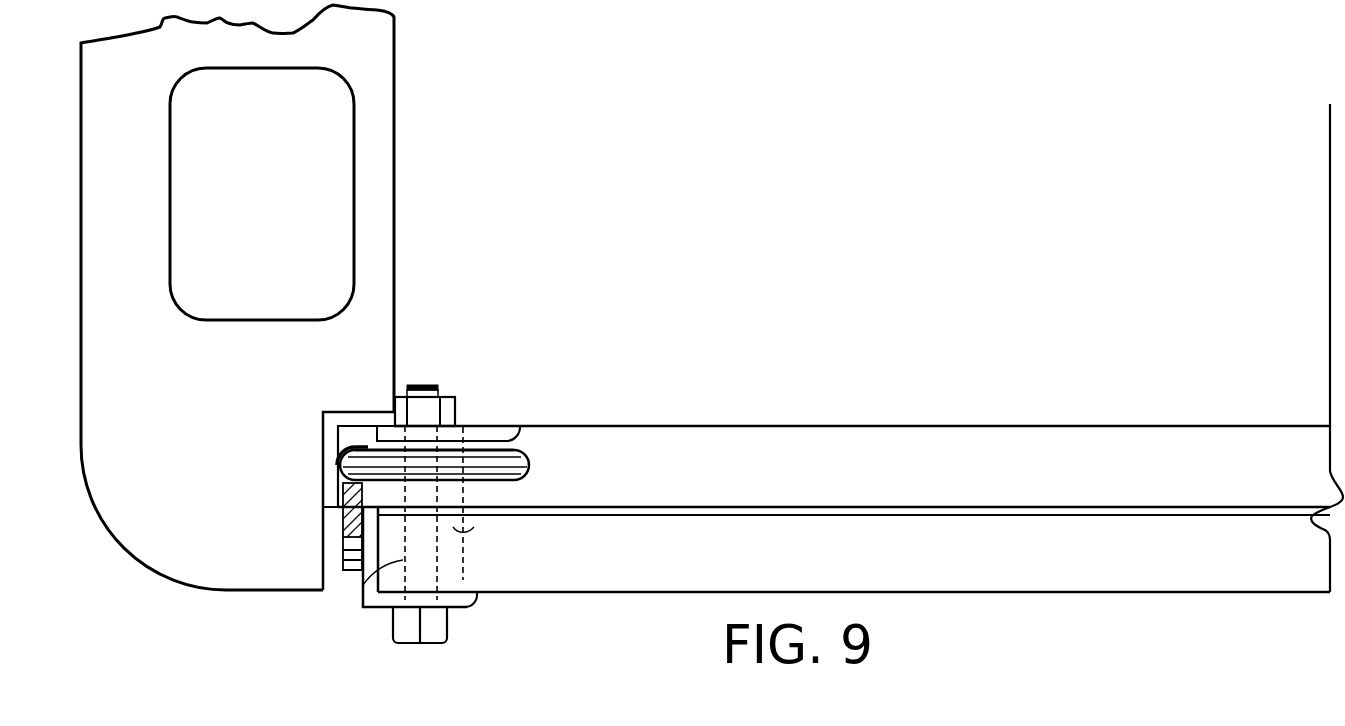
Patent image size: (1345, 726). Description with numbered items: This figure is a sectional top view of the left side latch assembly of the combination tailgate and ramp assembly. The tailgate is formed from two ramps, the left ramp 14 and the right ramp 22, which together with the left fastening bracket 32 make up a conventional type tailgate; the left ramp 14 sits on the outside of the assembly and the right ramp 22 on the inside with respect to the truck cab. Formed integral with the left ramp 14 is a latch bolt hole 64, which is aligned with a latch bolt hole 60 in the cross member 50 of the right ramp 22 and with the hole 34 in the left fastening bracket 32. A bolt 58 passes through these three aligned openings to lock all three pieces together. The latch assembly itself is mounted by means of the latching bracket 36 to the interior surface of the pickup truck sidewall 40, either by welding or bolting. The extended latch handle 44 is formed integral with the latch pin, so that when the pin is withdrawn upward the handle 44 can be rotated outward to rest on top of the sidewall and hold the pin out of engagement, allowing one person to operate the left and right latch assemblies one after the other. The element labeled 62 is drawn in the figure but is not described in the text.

The left ramp 14 is at (575, 574).
The right ramp 22 is at (584, 482).
The left fastening bracket 32 is at (378, 598).
The hole 34 is at (447, 600).
The latching bracket 36 is at (347, 410).
The pickup truck sidewall 40 is at (323, 507).
The extended latch handle 44 is at (527, 453).
The cross member 50 is at (462, 492).
The bolt 58 is at (452, 636).
The latch bolt hole 60 is at (462, 441).
The fastener 62 is at (453, 529).
The latch bolt hole 64 is at (362, 585).